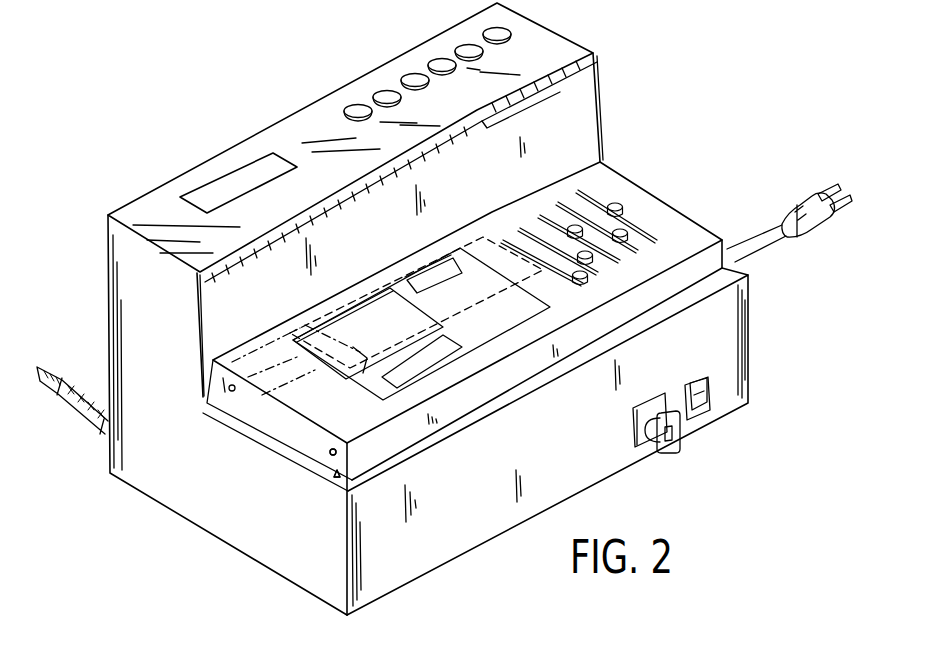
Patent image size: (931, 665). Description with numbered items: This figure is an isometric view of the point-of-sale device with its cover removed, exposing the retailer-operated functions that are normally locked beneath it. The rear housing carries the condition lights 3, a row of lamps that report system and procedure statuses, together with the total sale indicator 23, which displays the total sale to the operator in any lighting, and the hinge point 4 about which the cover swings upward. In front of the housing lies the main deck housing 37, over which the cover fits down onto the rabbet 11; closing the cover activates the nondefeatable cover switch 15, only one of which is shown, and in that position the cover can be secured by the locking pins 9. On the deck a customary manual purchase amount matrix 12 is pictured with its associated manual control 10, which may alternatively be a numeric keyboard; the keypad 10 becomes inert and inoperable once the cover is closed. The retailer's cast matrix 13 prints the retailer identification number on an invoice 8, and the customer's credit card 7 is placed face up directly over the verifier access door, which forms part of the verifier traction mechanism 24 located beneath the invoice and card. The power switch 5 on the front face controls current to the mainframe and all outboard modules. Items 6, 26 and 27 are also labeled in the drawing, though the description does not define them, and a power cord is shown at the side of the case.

The condition lights 3 is at (482, 0).
The cover hinge 4 is at (600, 98).
The main power switch 5 is at (712, 406).
The card outline 6 is at (206, 365).
The credit card 7 is at (362, 368).
The invoice 8 is at (382, 400).
The locking pins 9 is at (330, 454).
The manual control / keypad 10 is at (635, 222).
The rabbet 11 is at (750, 305).
The purchase amount matrix 12 is at (455, 265).
The cast matrix 13 is at (460, 345).
The cover switch 15 is at (336, 477).
The total sale indicator 23 is at (200, 187).
The verifier traction mechanism 24 is at (200, 383).
The power receptacle 26 is at (646, 444).
The receptacle socket 27 is at (684, 440).
The main deck housing 37 is at (390, 402).